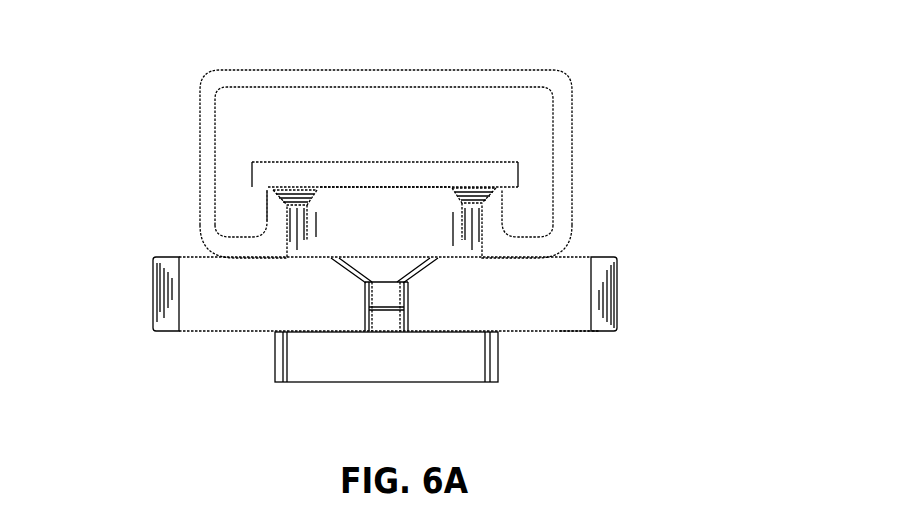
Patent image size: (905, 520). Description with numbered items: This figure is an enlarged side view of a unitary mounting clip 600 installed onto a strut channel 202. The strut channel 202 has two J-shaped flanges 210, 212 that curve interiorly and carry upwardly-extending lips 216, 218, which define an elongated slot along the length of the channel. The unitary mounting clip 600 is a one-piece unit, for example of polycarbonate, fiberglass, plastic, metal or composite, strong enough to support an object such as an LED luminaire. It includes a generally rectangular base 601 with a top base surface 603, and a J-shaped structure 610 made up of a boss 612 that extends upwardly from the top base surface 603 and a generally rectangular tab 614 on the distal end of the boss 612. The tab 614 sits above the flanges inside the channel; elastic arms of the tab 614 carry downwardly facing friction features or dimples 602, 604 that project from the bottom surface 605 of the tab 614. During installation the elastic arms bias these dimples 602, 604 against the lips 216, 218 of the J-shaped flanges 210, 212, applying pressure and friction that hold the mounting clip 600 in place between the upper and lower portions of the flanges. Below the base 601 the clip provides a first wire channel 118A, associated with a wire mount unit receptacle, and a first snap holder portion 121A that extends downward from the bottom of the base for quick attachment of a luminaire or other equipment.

The strut channel 202 is at (570, 82).
The friction feature 604 is at (553, 148).
The J-shaped flange 210 is at (210, 235).
The J-shaped flange 212 is at (560, 215).
The friction feature 602 is at (266, 186).
The J-shaped structure 610 is at (258, 200).
The upwardly-extending lip 218 is at (508, 192).
The unitary mounting clip 600 is at (474, 151).
The bottom surface 605 is at (386, 197).
The upwardly-extending lip 216 is at (266, 190).
The tab 614 is at (473, 186).
The boss 612 is at (452, 246).
The top base surface 603 is at (593, 252).
The base 601 is at (578, 340).
The first wire channel 118A is at (380, 279).
The first snap holder portion 121A is at (455, 376).